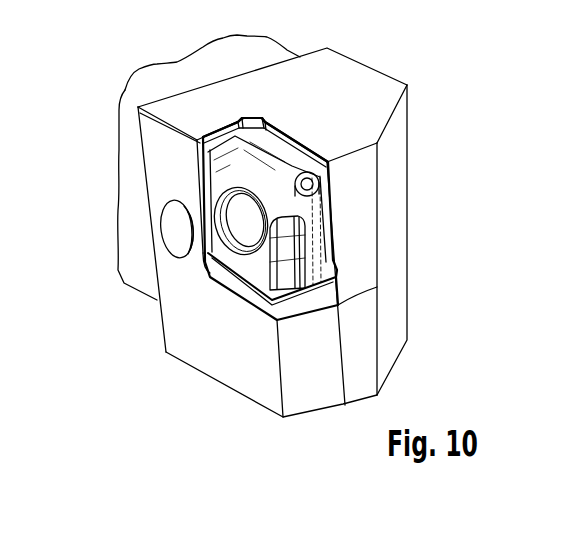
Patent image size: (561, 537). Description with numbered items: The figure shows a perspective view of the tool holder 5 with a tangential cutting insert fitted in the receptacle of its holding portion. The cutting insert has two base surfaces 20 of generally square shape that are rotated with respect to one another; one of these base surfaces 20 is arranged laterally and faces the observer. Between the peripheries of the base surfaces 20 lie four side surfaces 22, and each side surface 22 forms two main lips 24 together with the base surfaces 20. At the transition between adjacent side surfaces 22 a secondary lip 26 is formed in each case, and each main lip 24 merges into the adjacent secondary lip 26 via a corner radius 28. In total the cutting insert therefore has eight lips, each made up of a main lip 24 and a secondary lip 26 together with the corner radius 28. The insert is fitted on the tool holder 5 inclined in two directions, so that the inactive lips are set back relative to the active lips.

The tool holder 5 is at (121, 347).
The base surface 20 is at (220, 180).
The side surface 22 is at (288, 128).
The main lip 24 is at (240, 168).
The secondary lip 26 is at (289, 181).
The corner radius 28 is at (291, 172).